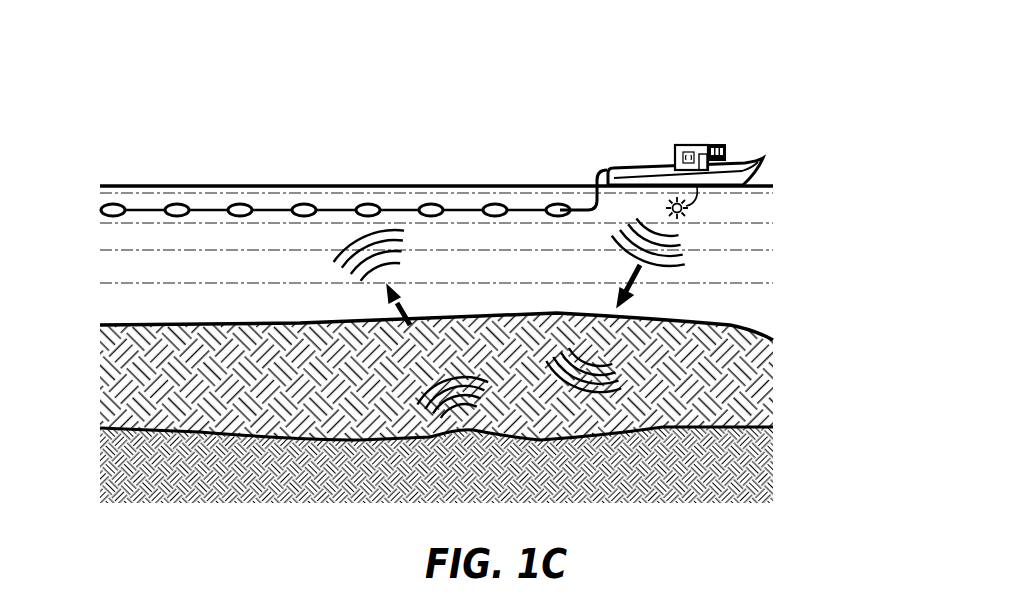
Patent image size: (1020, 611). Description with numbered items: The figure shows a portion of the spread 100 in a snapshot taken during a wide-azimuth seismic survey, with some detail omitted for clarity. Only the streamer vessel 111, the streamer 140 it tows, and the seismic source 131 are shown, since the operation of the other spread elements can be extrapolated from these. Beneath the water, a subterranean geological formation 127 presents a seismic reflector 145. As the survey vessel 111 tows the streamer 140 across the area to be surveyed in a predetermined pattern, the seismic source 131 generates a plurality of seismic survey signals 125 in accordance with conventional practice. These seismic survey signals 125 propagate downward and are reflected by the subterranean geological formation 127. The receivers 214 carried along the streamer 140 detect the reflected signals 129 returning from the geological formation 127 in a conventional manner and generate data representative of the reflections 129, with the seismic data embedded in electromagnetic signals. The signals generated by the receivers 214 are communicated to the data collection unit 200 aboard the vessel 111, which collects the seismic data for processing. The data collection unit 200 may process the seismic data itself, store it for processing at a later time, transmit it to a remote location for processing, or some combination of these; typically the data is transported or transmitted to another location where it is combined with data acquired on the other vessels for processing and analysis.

The spread 100 is at (291, 118).
The streamer vessel 111 is at (747, 162).
The seismic survey signals 125 is at (612, 268).
The subterranean geological formation 127 is at (383, 396).
The reflected signals 129 is at (410, 257).
The seismic source 131 is at (688, 215).
The streamer 140 is at (600, 175).
The seismic reflector 145 is at (645, 427).
The data collection unit 200 is at (677, 145).
The receivers 214 is at (336, 185).